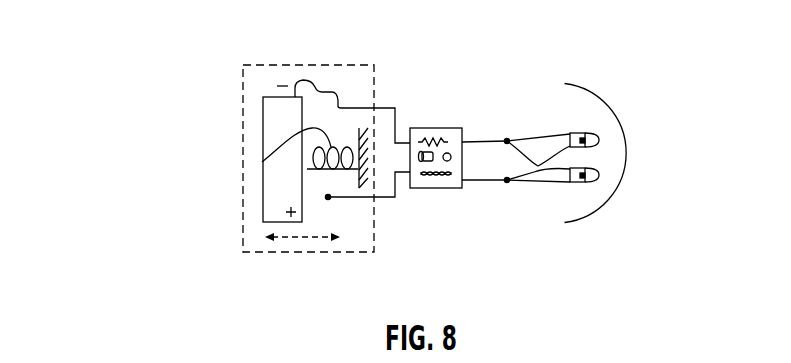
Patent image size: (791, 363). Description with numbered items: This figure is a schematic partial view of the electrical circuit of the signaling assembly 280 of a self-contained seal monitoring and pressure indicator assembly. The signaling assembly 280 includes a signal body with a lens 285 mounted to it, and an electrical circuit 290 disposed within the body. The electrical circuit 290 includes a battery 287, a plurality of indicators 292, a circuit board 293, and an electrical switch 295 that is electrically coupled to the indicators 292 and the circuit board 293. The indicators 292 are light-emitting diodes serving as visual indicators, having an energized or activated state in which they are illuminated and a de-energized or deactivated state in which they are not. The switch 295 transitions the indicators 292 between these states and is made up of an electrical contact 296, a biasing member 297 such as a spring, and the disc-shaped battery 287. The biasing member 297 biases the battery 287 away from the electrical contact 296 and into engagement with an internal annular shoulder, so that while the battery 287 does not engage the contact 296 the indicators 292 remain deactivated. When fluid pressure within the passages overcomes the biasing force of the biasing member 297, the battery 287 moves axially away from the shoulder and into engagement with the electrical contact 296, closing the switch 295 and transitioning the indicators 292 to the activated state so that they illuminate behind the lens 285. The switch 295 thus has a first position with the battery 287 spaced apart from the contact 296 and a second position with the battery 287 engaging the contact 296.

The signaling assembly 280 is at (186, 44).
The electrical circuit 290 is at (193, 110).
The battery 287 is at (272, 193).
The electrical switch 295 is at (332, 65).
The biasing member 297 is at (262, 162).
The electrical contact 296 is at (328, 197).
The circuit board 293 is at (433, 128).
The indicators 292 is at (574, 132).
The lens 285 is at (609, 105).